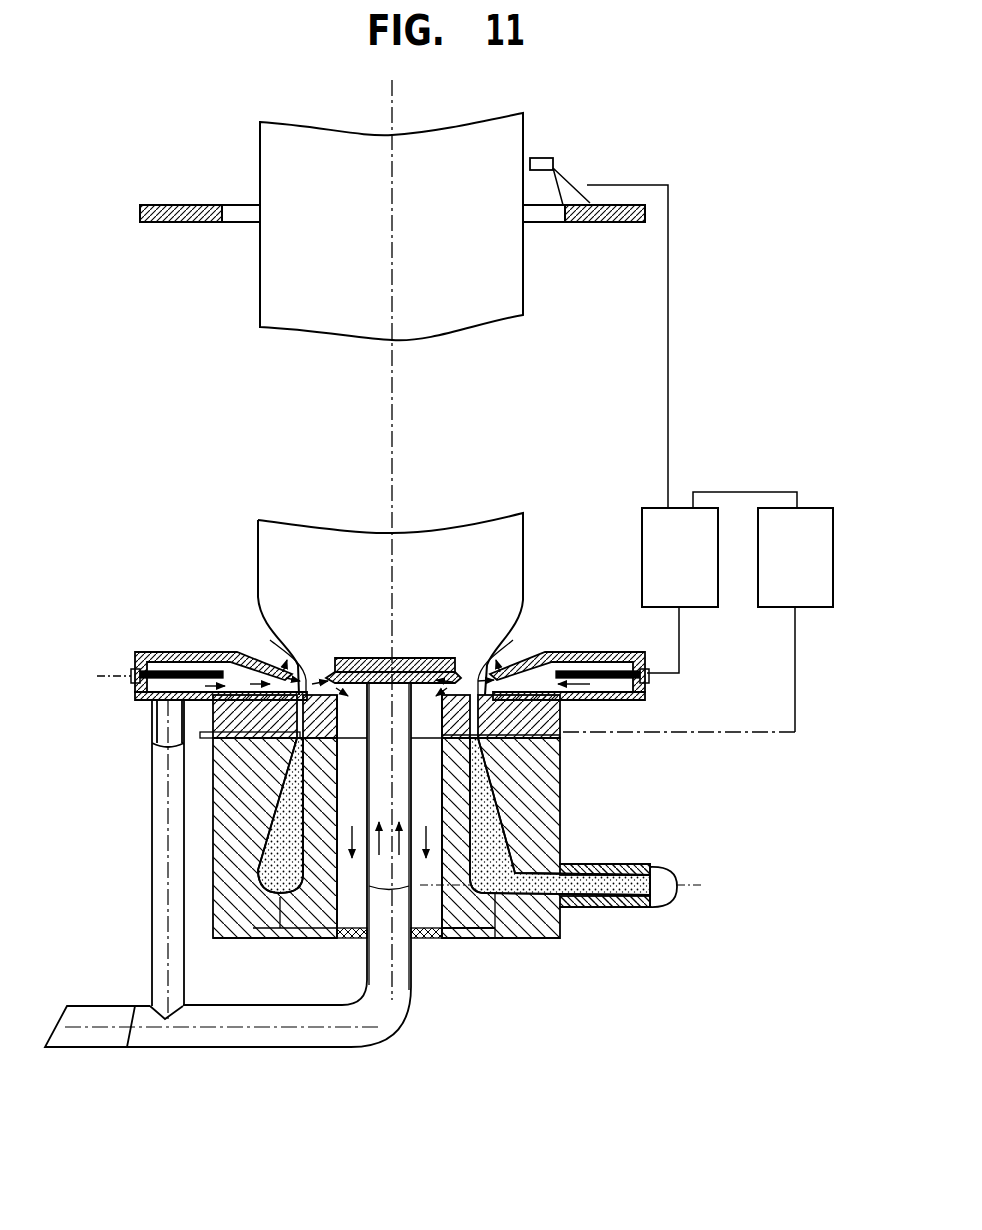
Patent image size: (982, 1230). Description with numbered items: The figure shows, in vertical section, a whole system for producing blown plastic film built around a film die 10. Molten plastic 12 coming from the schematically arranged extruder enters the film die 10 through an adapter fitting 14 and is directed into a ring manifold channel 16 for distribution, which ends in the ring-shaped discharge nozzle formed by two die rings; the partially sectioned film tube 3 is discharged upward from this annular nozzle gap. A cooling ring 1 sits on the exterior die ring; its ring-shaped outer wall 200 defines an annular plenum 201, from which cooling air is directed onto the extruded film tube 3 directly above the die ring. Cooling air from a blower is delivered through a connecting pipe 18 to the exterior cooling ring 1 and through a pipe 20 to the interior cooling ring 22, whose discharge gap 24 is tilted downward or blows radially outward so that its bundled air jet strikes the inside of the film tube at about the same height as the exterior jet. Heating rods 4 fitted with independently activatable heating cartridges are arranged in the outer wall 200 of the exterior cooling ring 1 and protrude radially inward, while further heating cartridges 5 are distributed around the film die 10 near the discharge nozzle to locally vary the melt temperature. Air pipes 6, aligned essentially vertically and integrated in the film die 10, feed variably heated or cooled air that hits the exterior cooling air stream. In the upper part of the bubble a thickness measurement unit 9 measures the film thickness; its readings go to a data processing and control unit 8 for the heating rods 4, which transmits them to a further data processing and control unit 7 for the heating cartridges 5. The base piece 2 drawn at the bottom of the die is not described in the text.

The outer wall 200 is at (160, 634).
The annular plenum 201 is at (195, 652).
The cooling ring 1 is at (569, 647).
The heating rods 4 is at (573, 657).
The film tube 3 is at (523, 565).
The discharge gap 24 is at (333, 660).
The interior cooling ring 22 is at (443, 660).
The thickness measurement unit 9 is at (553, 158).
The data processing and control unit 8 is at (655, 513).
The data processing and control unit 7 is at (810, 518).
The heating cartridges 5 is at (562, 718).
The air pipes 6 is at (200, 738).
The ring manifold channel 16 is at (562, 796).
The film die 10 is at (461, 853).
The base 2 is at (530, 940).
The molten plastic 12 is at (633, 864).
The adapter fitting 14 is at (657, 912).
The connecting pipe 18 is at (152, 872).
The pipe 20 is at (405, 1030).